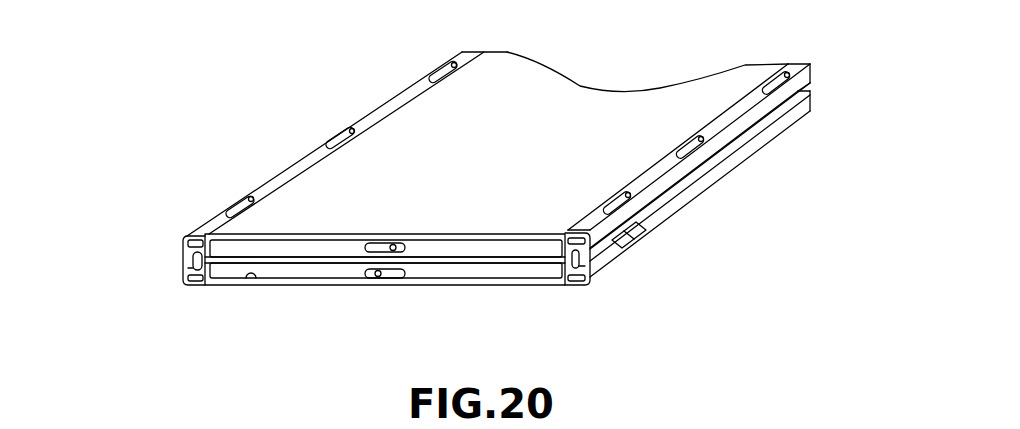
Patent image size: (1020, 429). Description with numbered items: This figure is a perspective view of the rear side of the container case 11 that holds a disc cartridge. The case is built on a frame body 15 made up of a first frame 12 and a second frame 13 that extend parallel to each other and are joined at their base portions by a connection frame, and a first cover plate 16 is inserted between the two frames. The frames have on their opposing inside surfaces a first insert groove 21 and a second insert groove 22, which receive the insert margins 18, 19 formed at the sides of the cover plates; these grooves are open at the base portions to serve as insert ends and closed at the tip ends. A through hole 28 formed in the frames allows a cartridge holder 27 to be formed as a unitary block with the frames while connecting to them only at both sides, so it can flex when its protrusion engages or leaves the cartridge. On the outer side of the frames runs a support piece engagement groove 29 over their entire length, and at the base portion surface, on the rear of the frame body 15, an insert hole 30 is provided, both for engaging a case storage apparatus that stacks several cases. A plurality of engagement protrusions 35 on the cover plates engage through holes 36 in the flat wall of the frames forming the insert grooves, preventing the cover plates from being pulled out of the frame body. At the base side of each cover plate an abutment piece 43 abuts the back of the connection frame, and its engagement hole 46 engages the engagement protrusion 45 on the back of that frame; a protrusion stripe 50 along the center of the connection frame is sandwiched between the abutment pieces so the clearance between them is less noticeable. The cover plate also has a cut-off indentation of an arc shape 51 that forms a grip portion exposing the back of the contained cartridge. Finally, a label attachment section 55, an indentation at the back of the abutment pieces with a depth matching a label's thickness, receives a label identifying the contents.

The container case 11 is at (300, 108).
The first frame 12 is at (278, 174).
The second frame 13 is at (707, 188).
The frame body 15 is at (770, 143).
The first cover plate 16 is at (512, 72).
The insert margin 18 is at (190, 238).
The insert margin 19 is at (199, 286).
The first insert groove 21 is at (573, 232).
The second insert groove 22 is at (190, 282).
The cartridge holder 27 is at (630, 246).
The through hole 28 is at (636, 233).
The support piece engagement groove 29 is at (192, 259).
The insert hole 30 is at (190, 268).
The engagement protrusion 35 is at (238, 206).
The through hole 36 is at (353, 130).
The abutment piece 43 is at (503, 247).
The engagement protrusion 45 is at (372, 244).
The engagement hole 46 is at (394, 246).
The protrusion stripe 50 is at (294, 258).
The cut-off indentation of an arc shape 51 is at (580, 84).
The label attachment section 55 is at (250, 278).